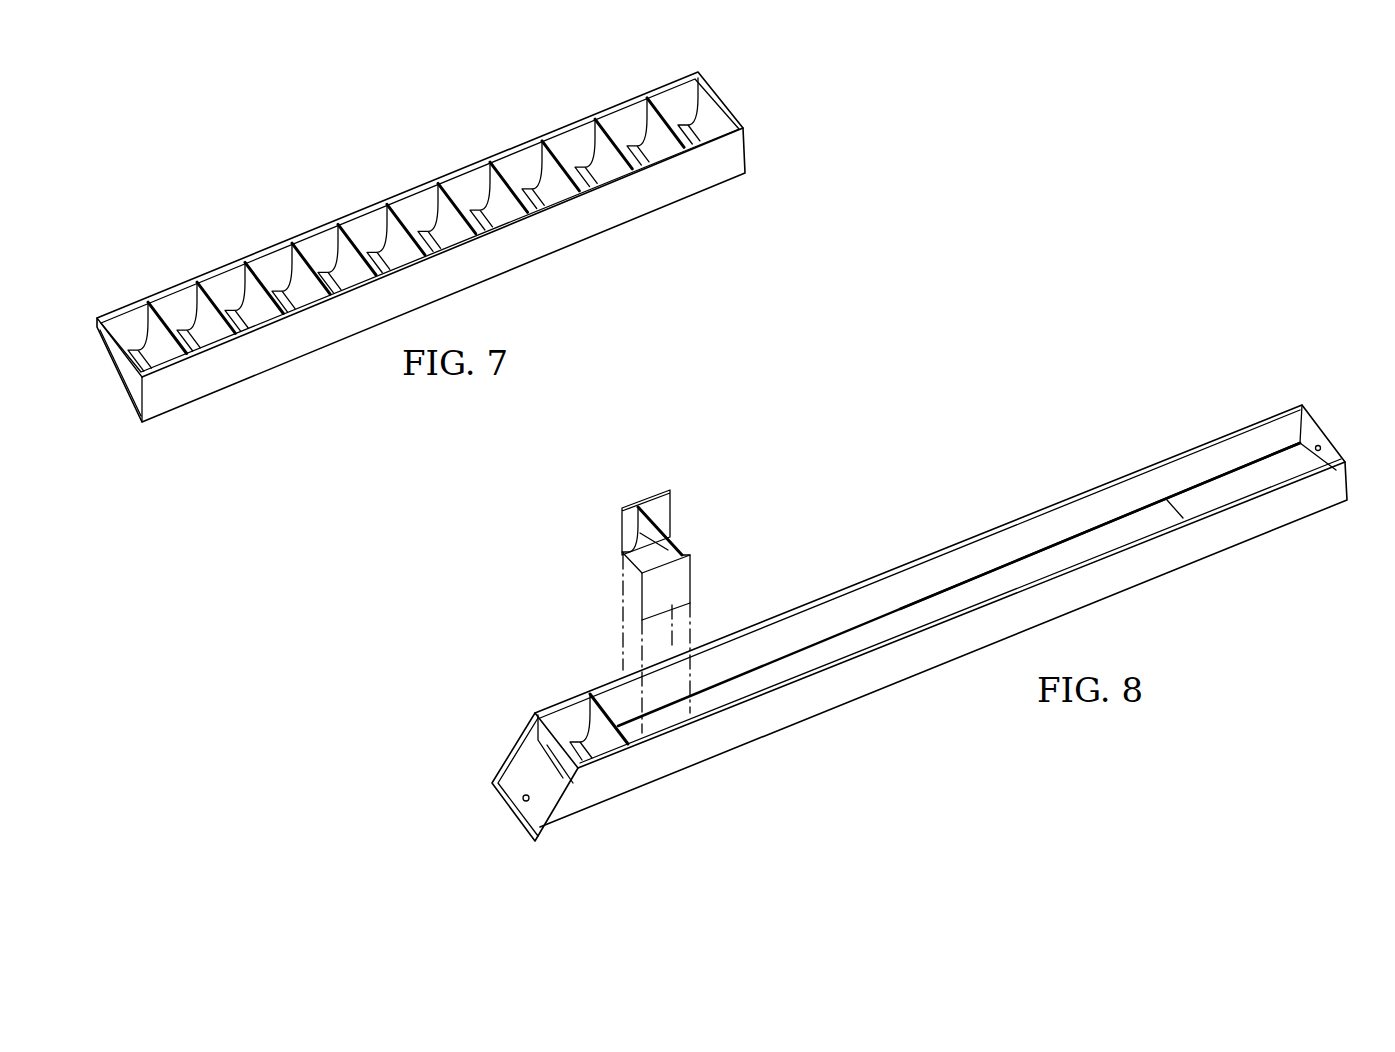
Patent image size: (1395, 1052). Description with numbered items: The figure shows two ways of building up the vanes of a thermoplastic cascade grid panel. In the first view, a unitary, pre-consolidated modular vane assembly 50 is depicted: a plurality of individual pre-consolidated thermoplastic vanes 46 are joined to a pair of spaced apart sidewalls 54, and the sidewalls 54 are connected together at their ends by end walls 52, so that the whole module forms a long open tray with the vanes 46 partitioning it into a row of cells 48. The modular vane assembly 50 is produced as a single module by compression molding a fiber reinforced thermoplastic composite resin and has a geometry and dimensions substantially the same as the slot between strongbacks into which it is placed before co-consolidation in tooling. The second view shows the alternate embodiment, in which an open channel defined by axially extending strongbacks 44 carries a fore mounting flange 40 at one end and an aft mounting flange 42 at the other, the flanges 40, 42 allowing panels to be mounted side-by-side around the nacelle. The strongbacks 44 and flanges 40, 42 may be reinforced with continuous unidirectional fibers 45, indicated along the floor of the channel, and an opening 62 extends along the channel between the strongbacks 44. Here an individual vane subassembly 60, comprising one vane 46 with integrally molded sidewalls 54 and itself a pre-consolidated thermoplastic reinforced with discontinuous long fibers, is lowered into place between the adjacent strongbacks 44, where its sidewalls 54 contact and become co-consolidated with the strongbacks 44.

In FIG. 8, the fore mounting flange 40 is at (530, 823).
In FIG. 8, the aft mounting flange 42 is at (1330, 452).
In FIG. 8, the strongback 44 is at (920, 553).
In FIG. 8, the continuous unidirectional fibers 45 is at (837, 598).
In FIG. 7, the vane 46 is at (153, 340).
In FIG. 8, the vane 46 is at (665, 550).
In FIG. 7, the compartment 48 is at (180, 320).
In FIG. 7, the modular vane assembly 50 is at (850, 117).
In FIG. 8, the modular vane assembly 50 is at (1230, 364).
In FIG. 7, the end wall 52 is at (722, 97).
In FIG. 7, the sidewall 54 is at (273, 260).
In FIG. 8, the sidewall 54 is at (663, 502).
In FIG. 8, the vane subassembly 60 is at (580, 495).
In FIG. 8, the opening 62 is at (1079, 518).